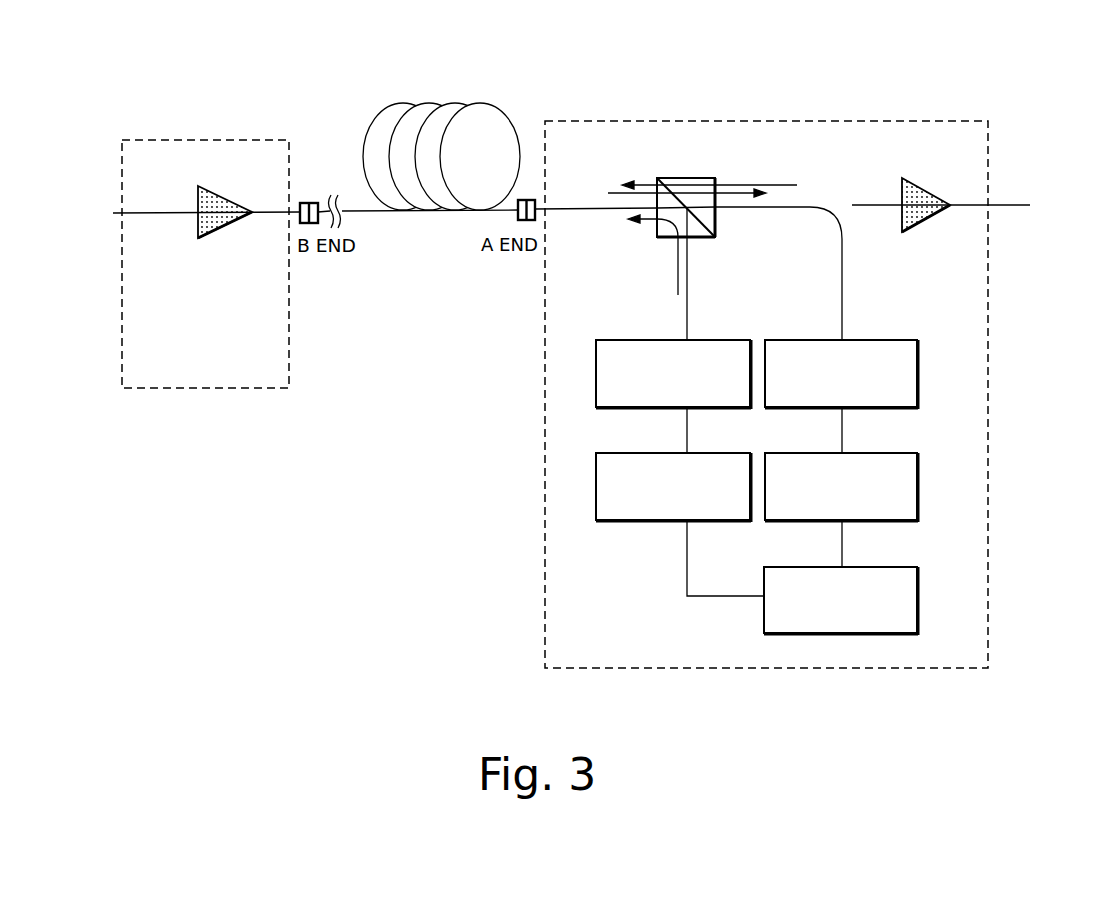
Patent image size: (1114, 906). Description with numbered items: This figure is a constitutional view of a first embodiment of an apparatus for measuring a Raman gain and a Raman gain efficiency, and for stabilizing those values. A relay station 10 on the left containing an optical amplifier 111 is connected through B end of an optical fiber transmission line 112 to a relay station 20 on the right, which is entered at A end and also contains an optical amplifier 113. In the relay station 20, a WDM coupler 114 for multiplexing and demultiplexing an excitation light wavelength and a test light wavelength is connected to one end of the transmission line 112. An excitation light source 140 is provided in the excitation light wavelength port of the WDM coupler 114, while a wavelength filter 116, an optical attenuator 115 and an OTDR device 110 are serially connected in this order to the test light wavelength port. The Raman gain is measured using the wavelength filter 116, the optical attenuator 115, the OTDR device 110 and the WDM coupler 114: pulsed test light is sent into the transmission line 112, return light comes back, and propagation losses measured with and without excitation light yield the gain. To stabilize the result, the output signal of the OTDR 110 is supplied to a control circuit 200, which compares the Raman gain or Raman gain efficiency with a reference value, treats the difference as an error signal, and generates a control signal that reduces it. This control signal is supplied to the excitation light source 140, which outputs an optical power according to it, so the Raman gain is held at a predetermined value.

The relay station 10 is at (136, 153).
The relay station 20 is at (634, 120).
The optical amplifier 111 is at (217, 233).
The optical fiber transmission line 112 is at (473, 104).
The optical amplifier 113 is at (928, 222).
The WDM coupler 114 is at (663, 177).
The optical attenuator 115 is at (880, 452).
The wavelength filter 116 is at (877, 336).
The excitation light source 140 is at (720, 336).
The control circuit 200 is at (642, 522).
The OTDR device 110 is at (887, 566).